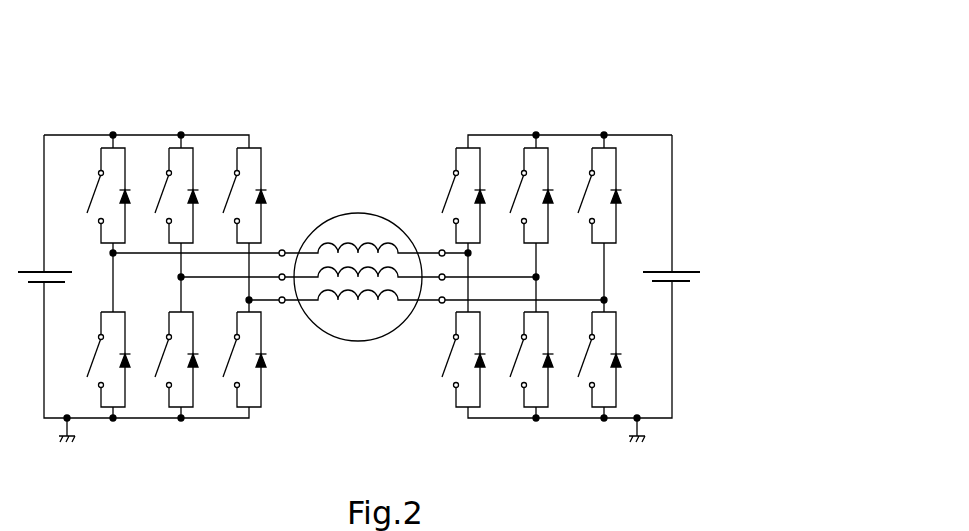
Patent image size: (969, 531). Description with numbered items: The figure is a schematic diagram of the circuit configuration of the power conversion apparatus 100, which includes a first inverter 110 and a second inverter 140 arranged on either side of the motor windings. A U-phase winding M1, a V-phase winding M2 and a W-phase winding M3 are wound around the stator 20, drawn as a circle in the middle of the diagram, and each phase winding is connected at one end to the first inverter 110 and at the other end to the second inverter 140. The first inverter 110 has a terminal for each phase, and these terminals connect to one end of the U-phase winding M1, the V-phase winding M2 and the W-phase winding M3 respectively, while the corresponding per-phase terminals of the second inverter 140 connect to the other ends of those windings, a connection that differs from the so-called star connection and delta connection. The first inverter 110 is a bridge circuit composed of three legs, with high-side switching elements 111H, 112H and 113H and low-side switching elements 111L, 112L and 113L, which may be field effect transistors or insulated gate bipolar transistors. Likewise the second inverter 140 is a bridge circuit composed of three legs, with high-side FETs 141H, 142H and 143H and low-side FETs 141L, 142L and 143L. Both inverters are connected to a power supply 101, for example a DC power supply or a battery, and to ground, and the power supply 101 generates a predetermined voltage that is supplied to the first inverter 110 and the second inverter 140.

The power conversion apparatus 100 is at (505, 62).
The first inverter 110 is at (122, 124).
The second inverter 140 is at (588, 120).
The power supply 101 is at (50, 269).
The stator 20 is at (388, 215).
The U-phase winding M1 is at (347, 242).
The V-phase winding M2 is at (327, 260).
The W-phase winding M3 is at (330, 293).
The high-side switching element 111H is at (97, 195).
The high-side switching element 112H is at (165, 195).
The high-side switching element 113H is at (233, 195).
The low-side switching element 111L is at (97, 359).
The low-side switching element 112L is at (165, 359).
The low-side switching element 113L is at (233, 359).
The high-side switching element 141H is at (452, 195).
The high-side switching element 142H is at (520, 195).
The high-side switching element 143H is at (588, 195).
The low-side switching element 141L is at (452, 359).
The low-side switching element 142L is at (520, 359).
The low-side switching element 143L is at (588, 359).